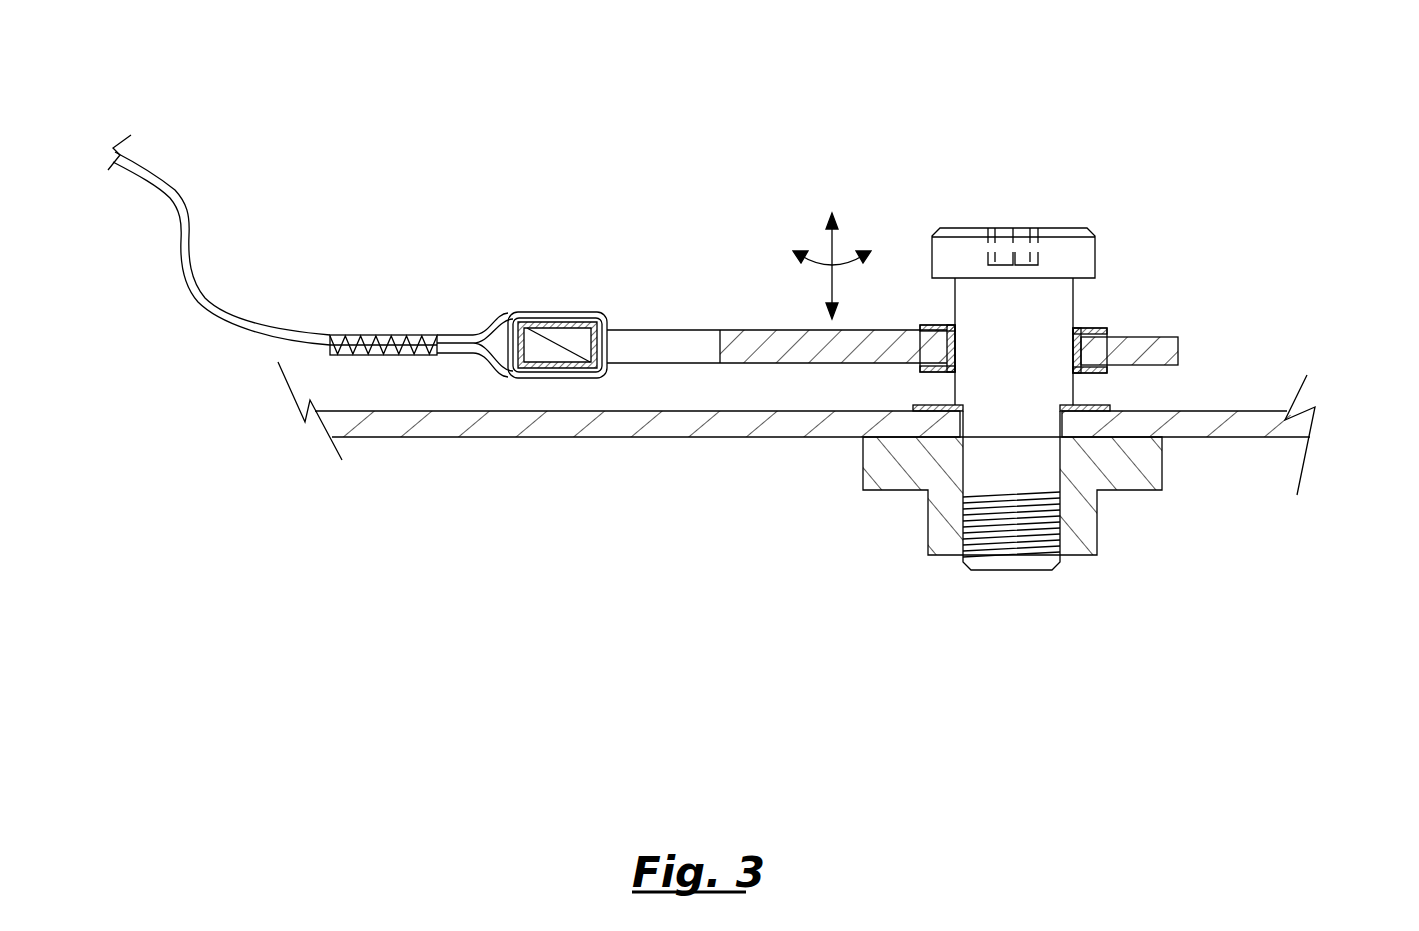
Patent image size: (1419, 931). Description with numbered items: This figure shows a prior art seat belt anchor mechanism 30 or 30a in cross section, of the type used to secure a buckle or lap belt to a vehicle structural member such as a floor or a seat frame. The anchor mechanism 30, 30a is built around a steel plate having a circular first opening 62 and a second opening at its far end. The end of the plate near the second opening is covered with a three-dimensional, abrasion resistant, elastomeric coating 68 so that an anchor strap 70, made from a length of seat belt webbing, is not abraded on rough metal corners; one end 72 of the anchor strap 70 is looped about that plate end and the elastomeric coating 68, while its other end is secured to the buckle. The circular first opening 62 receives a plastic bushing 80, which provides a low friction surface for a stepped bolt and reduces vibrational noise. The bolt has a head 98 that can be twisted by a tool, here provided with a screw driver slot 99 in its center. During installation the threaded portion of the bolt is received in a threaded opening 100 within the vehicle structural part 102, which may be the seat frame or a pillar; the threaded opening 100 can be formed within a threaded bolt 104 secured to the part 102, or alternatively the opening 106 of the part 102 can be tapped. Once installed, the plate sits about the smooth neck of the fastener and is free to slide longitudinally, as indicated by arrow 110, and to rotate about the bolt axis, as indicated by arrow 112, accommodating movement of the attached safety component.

The anchor mechanism 30 is at (643, 85).
The anchor mechanism 30a is at (815, 307).
The circular first opening 62 is at (1083, 340).
The elastomeric coating 68 is at (562, 322).
The anchor strap 70 is at (163, 180).
The strap end 72 is at (482, 328).
The plastic bushing 80 is at (1100, 330).
The head 98 is at (1087, 260).
The screw driver slot 99 is at (1005, 245).
The threaded opening 100 is at (1057, 473).
The vehicle structural part 102 is at (1227, 420).
The threaded bolt 104 is at (917, 473).
The opening 106 is at (967, 427).
The arrow 110 is at (833, 247).
The arrow 112 is at (820, 260).